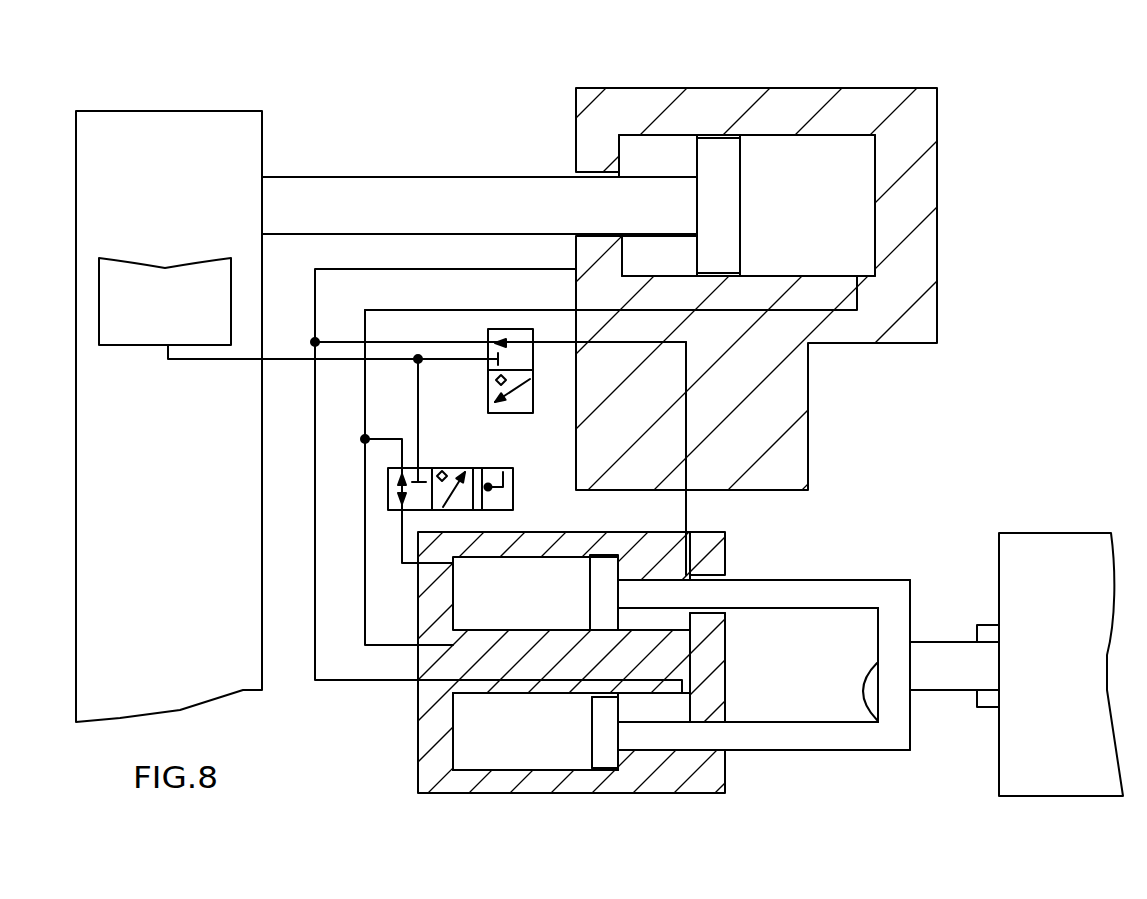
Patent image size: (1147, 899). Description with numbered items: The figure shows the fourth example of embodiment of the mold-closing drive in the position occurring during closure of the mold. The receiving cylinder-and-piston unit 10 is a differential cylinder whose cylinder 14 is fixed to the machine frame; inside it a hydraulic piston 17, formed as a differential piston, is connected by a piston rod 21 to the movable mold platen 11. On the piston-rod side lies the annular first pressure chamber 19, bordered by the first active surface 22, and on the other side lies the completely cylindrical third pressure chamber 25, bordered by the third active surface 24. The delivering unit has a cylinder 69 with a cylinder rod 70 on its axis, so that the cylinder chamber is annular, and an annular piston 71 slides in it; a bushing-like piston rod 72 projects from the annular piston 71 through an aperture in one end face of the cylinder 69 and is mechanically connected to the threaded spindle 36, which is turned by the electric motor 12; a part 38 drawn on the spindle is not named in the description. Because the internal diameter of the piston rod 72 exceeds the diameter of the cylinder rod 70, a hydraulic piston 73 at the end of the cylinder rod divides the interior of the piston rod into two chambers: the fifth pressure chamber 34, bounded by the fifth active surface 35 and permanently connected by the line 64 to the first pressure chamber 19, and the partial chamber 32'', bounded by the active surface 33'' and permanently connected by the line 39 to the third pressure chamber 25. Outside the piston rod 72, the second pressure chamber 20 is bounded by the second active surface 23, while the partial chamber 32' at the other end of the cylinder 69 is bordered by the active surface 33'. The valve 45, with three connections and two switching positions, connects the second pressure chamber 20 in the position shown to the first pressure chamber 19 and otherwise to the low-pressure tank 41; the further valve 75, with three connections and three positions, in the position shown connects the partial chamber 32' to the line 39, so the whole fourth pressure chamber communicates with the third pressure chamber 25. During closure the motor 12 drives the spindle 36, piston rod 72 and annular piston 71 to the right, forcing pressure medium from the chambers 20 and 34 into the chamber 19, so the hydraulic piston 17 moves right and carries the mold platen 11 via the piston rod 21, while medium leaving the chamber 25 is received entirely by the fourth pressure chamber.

The receiving cylinder-and-piston unit 10 is at (675, 293).
The movable mold platen 11 is at (233, 165).
The electric motor 12 is at (1032, 757).
The cylinder 14 is at (890, 103).
The hydraulic piston 17 is at (722, 160).
The first pressure chamber 19 is at (653, 153).
The second pressure chamber 20 is at (693, 570).
The piston rod 21 is at (414, 205).
The first active surface 22 is at (695, 255).
The second active surface 23 is at (627, 563).
The third active surface 24 is at (743, 253).
The third pressure chamber 25 is at (838, 190).
The partial chamber 32' is at (535, 773).
The partial chamber 32'' is at (816, 631).
The active surface 33' is at (560, 775).
The active surface 33'' is at (889, 728).
The fifth pressure chamber 34 is at (657, 708).
The fifth active surface 35 is at (620, 707).
The threaded spindle 36 is at (938, 670).
The stop collar 38 is at (985, 610).
The line 39 is at (365, 408).
The low-pressure tank 41 is at (125, 345).
The valve 45 is at (533, 400).
The line 64 is at (315, 607).
The cylinder 69 is at (415, 762).
The cylinder rod 70 is at (493, 665).
The annular piston 71 is at (602, 747).
The piston rod 72 is at (823, 733).
The hydraulic piston 73 is at (710, 687).
The valve 75 is at (437, 467).